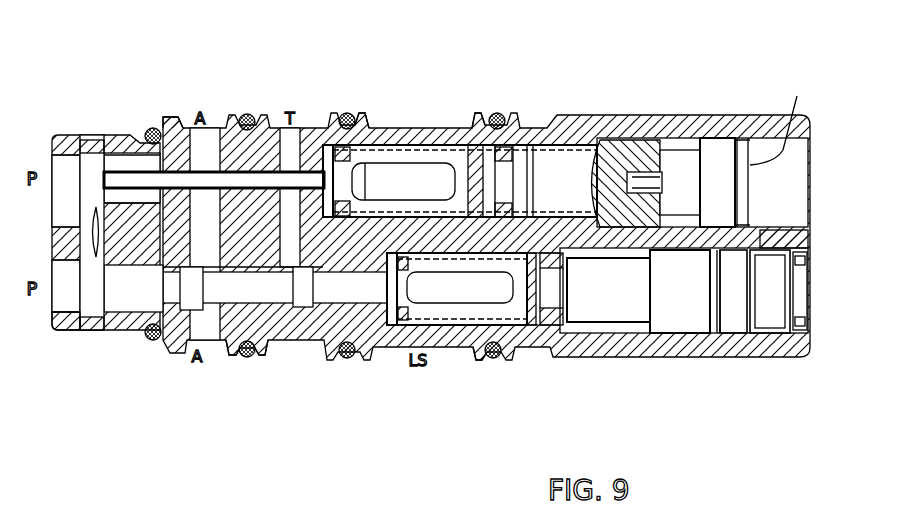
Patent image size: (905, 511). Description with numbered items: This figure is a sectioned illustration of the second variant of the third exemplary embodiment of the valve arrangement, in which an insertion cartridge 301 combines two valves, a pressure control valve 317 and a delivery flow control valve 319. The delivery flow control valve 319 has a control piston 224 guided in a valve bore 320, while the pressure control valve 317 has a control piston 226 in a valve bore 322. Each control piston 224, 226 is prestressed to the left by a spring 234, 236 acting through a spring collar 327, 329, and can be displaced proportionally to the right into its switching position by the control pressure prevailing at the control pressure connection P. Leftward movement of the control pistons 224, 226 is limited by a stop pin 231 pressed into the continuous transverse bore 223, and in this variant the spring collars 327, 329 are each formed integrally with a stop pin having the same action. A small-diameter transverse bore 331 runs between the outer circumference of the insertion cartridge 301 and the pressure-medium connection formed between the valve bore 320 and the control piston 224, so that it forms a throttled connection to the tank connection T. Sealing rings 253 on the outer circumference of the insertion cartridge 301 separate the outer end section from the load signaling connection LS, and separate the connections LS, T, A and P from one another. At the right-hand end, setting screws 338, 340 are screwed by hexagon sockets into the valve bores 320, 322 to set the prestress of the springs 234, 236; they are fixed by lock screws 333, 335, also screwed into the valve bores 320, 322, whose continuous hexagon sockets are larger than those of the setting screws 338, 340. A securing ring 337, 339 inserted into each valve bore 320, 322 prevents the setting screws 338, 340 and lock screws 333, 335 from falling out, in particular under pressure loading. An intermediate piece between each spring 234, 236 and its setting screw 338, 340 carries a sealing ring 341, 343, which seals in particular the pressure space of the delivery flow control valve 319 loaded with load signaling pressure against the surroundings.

The pressure control valve 317 is at (82, 110).
The control piston 226 is at (180, 116).
The insertion cartridge 301 is at (261, 96).
The control piston 224 is at (302, 160).
The valve bore 322 is at (303, 165).
The spring collar 329 is at (366, 116).
The spring collar 327 is at (397, 253).
The spring 236 is at (474, 116).
The transverse bore 223 is at (97, 257).
The delivery flow control valve 319 is at (57, 364).
The stop pin 231 is at (88, 290).
The sealing ring 253 is at (252, 358).
The valve bore 320 is at (229, 357).
The transverse bore 331 is at (287, 364).
The spring 234 is at (488, 362).
The sealing ring 343 is at (528, 334).
The sealing ring 341 is at (550, 334).
The setting screw 340 is at (605, 292).
The setting screw 338 is at (670, 312).
The lock screw 335 is at (686, 262).
The lock screw 333 is at (727, 312).
The securing ring 339 is at (757, 262).
The securing ring 337 is at (777, 300).